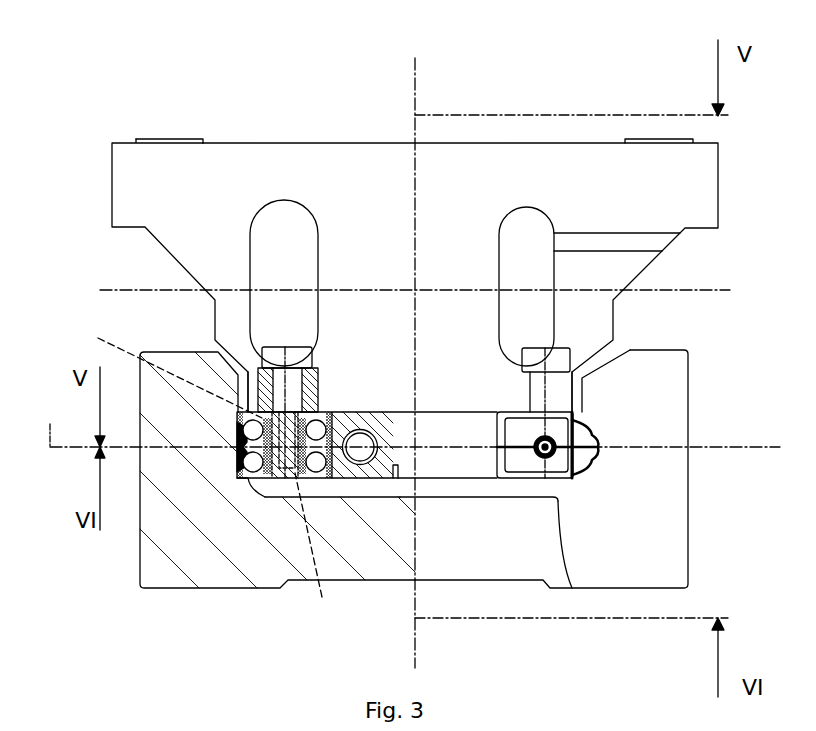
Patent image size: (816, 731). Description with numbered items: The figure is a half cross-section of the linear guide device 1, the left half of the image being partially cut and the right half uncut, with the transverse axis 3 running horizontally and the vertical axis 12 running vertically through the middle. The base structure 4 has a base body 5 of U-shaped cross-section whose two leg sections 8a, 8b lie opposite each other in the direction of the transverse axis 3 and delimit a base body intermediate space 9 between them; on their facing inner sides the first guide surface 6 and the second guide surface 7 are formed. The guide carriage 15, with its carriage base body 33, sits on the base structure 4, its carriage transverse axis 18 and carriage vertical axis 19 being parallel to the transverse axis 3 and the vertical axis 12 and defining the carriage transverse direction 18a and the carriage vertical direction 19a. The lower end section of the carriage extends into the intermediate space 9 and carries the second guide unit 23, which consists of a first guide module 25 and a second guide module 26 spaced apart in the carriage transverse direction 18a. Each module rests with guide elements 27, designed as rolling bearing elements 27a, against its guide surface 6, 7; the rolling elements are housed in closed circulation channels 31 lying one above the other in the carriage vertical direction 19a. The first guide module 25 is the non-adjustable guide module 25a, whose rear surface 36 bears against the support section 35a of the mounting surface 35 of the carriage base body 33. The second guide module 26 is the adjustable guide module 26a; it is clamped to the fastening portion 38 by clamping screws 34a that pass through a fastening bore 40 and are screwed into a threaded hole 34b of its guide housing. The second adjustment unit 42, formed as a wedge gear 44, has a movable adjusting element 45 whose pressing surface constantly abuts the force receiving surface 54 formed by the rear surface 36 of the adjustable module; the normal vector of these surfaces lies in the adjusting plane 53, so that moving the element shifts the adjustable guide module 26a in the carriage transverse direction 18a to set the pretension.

The linear guide device 1 is at (389, 206).
The transverse axis 3 is at (758, 450).
The base structure 4 is at (655, 532).
The base body 5 is at (148, 570).
The first guide surface 6 is at (566, 580).
The second guide surface 7 is at (267, 496).
The leg section 8a is at (668, 436).
The leg section 8b is at (183, 368).
The base body intermediate space 9 is at (493, 490).
The vertical axis 12 is at (474, 356).
The carriage vertical axis 19 is at (474, 356).
The carriage vertical direction 19a is at (417, 73).
The guide carriage 15 is at (127, 137).
The carriage transverse axis 18 is at (397, 268).
The carriage transverse direction 18a is at (118, 285).
The second guide unit 23 is at (444, 492).
The first guide module 25 is at (526, 540).
The non-adjustable guide module 25a is at (525, 466).
The second guide module 26 is at (312, 532).
The adjustable guide module 26a is at (292, 480).
The guide element 27 is at (367, 430).
The rolling bearing element 27a is at (336, 436).
The circulation channel 31 is at (206, 466).
The carriage base body 33 is at (286, 155).
The clamping screw 34a is at (315, 358).
The threaded hole 34b is at (248, 430).
The mounting surface 35 is at (522, 514).
The support section 35a is at (522, 514).
The rear surface 36 is at (413, 431).
The force receiving surface 54 is at (388, 442).
The fastening portion 38 is at (232, 375).
The fastening bore 40 is at (304, 392).
The second adjustment unit 42 is at (367, 519).
The wedge gear 44 is at (344, 486).
The movable adjusting element 45 is at (398, 498).
The adjusting plane 53 is at (47, 423).